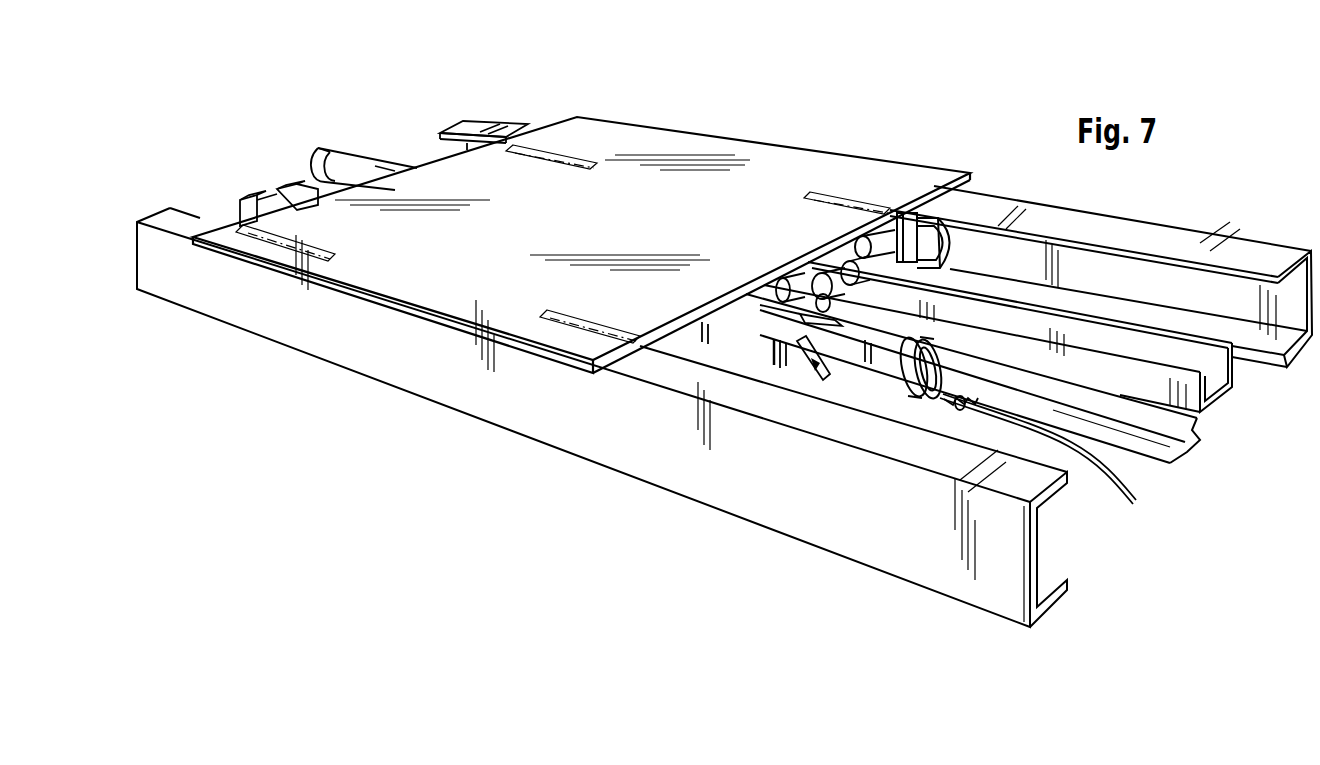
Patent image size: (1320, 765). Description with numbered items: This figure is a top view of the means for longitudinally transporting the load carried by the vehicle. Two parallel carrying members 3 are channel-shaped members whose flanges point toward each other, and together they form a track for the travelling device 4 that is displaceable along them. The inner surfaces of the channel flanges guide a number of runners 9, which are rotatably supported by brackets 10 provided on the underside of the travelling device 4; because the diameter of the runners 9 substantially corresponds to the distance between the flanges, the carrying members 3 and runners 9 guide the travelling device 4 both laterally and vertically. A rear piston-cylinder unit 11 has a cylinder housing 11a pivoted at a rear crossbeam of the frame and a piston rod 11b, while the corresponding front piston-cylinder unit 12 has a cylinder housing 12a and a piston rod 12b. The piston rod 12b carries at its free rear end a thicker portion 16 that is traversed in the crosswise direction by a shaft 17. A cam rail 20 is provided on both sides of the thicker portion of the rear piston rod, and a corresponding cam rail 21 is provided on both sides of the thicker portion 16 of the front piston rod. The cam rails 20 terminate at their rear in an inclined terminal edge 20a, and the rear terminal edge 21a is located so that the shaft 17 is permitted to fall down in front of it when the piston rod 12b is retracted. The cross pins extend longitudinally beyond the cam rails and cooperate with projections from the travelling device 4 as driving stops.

The carrying members 3 is at (1088, 230).
The travelling device 4 is at (683, 143).
The runners 9 is at (933, 226).
The brackets 10 is at (898, 228).
The rear piston-cylinder unit 11 is at (1196, 452).
The cylinder housing 11a is at (1147, 443).
The piston rod 11b is at (870, 346).
The front piston-cylinder unit 12 is at (370, 148).
The cylinder housing 12a is at (382, 168).
The piston rod 12b is at (795, 280).
The thicker portion 16 is at (797, 290).
The shaft 17 is at (812, 318).
The cam rail 20 is at (257, 197).
The inclined terminal edge 20a is at (814, 372).
The cam rail 21 is at (1193, 384).
The rear terminal edge 21a is at (832, 288).